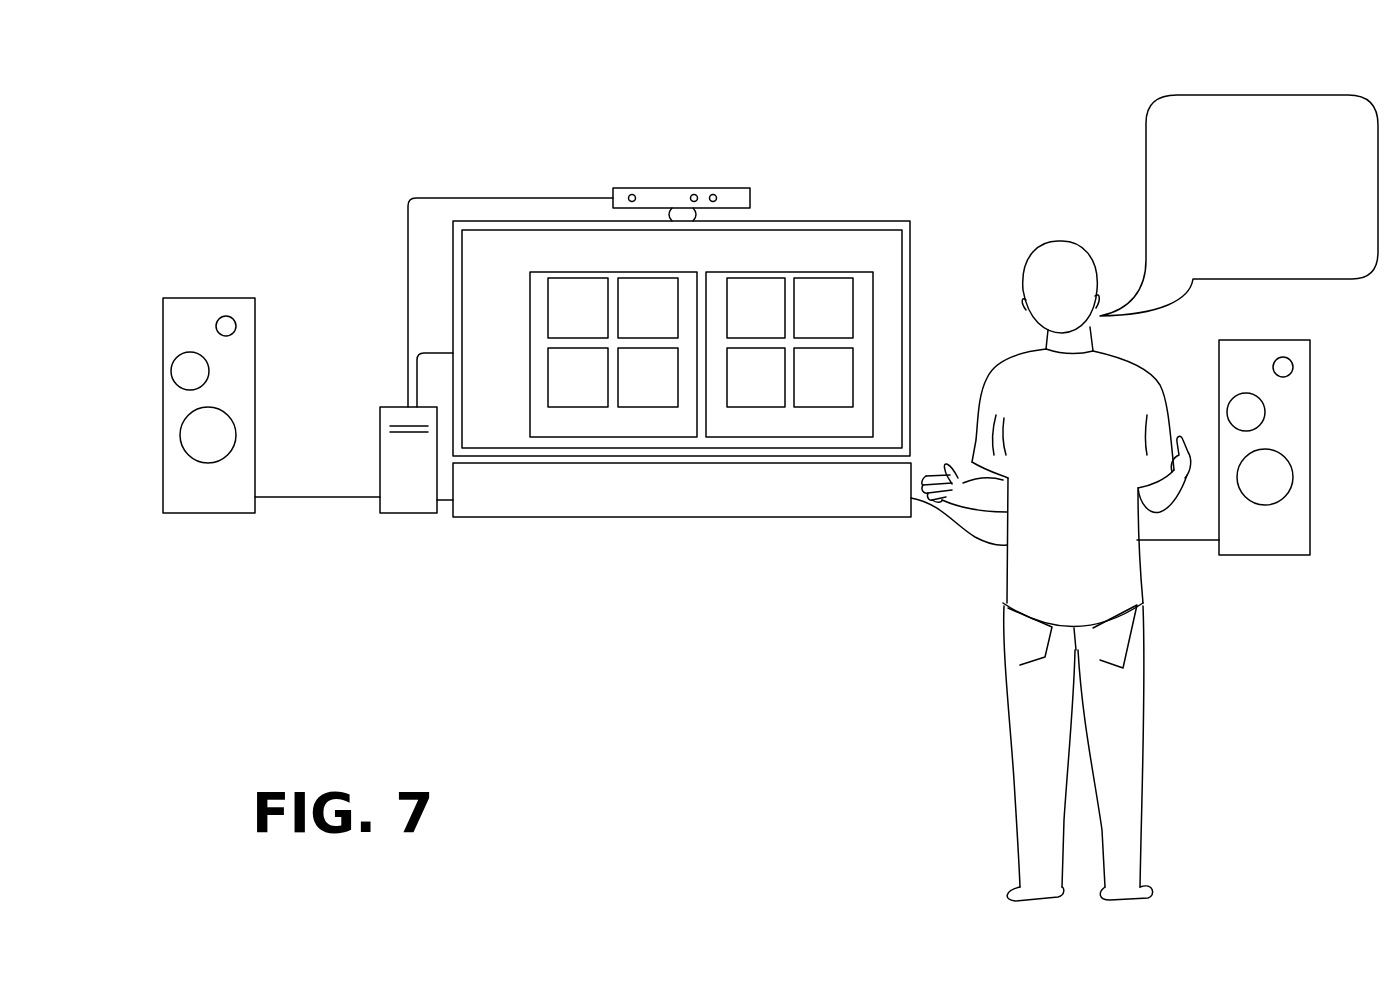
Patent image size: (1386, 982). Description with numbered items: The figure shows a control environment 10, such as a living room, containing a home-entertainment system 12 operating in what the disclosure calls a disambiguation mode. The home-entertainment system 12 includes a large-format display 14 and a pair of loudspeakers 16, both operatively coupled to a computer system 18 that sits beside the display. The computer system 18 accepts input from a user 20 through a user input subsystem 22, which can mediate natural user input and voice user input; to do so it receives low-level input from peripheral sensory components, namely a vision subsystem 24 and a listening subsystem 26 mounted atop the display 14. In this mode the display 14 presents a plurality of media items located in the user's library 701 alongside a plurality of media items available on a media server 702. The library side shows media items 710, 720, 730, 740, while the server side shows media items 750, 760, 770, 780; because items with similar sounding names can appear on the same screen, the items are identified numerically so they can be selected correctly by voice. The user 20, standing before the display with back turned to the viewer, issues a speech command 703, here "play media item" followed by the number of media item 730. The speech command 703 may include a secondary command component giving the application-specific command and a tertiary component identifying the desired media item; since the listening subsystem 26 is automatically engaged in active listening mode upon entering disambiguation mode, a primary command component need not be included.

The control environment 10 is at (162, 612).
The home-entertainment system 12 is at (310, 237).
The large-format display 14 is at (517, 289).
The loudspeakers 16 is at (197, 504).
The computer system 18 is at (424, 507).
The user 20 is at (1120, 409).
The user input subsystem 22 is at (365, 448).
The vision subsystem 24 is at (743, 188).
The listening subsystem 26 is at (652, 158).
The user's library 701 is at (672, 434).
The media server 702 is at (845, 434).
The speech command 703 is at (1347, 269).
The media item 710 is at (600, 331).
The media item 720 is at (670, 331).
The media item 730 is at (600, 401).
The media item 740 is at (670, 401).
The media item 750 is at (777, 331).
The media item 760 is at (844, 331).
The media item 770 is at (777, 401).
The media item 780 is at (844, 401).